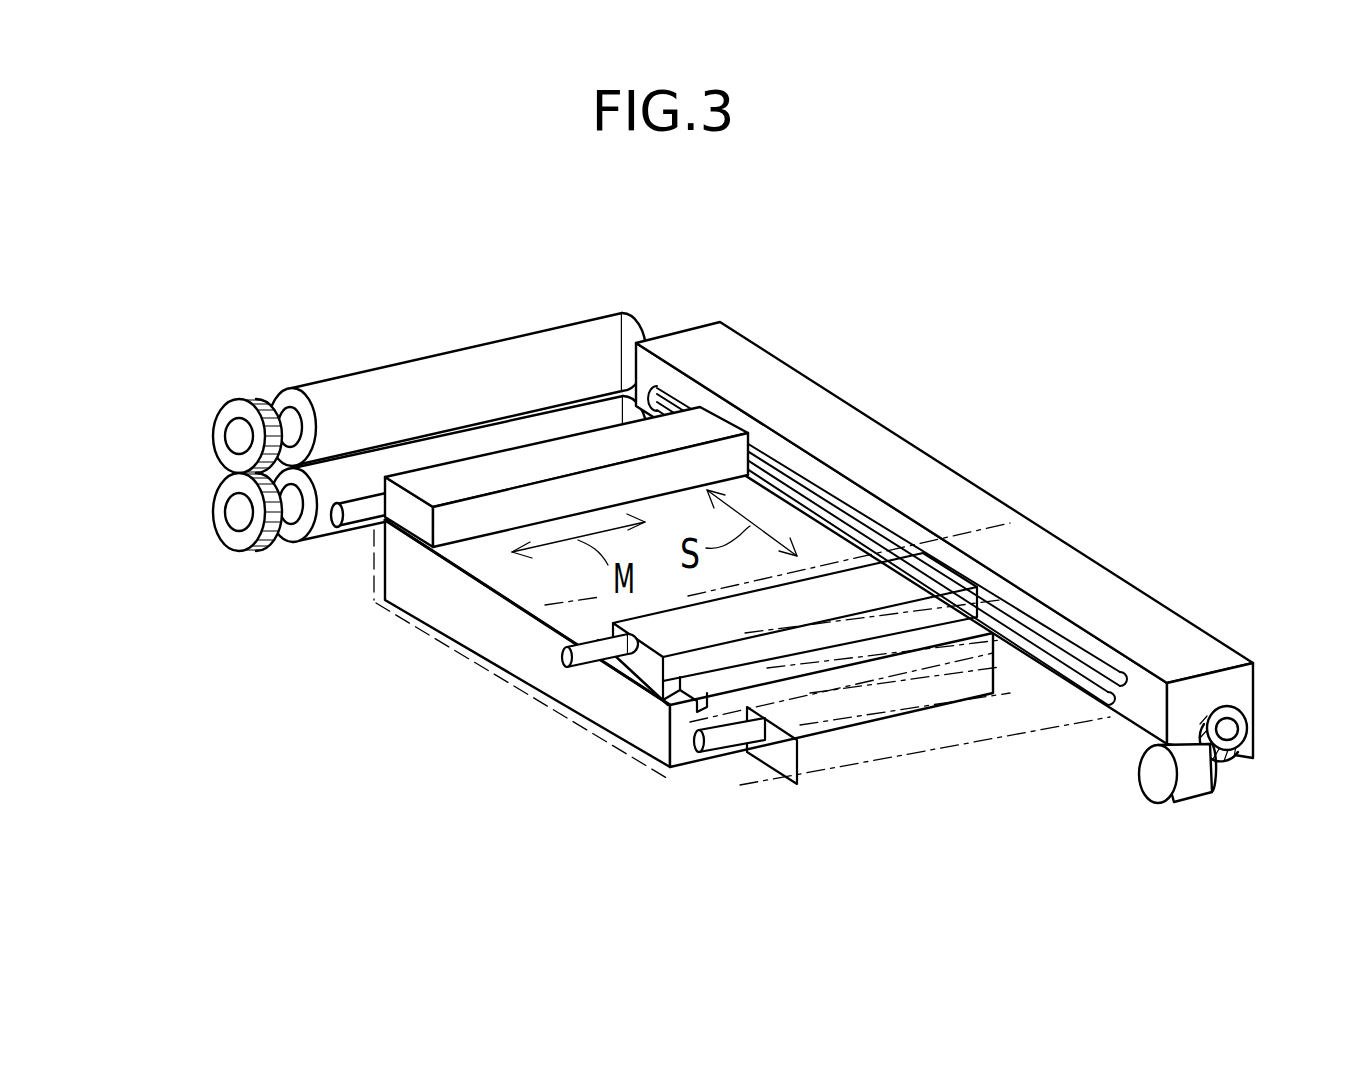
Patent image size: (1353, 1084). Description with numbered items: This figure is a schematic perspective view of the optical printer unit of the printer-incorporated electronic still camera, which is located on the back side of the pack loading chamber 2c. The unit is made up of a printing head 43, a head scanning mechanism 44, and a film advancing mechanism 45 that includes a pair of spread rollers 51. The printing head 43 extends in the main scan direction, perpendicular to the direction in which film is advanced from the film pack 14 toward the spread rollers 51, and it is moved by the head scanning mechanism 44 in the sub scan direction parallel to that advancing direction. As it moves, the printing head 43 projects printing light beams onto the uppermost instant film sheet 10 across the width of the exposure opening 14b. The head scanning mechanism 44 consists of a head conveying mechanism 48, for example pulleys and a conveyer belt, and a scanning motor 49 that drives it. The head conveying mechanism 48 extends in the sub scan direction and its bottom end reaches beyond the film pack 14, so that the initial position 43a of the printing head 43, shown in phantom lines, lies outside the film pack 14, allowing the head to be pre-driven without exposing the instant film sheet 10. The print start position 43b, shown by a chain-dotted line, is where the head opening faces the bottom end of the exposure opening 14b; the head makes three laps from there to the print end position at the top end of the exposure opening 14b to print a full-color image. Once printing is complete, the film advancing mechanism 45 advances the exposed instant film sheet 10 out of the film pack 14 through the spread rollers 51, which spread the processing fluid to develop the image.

The film advancing mechanism 45 is at (250, 279).
The spread rollers 51 is at (463, 437).
The printing head 43 is at (582, 450).
The exposure opening 14b is at (786, 522).
The head scanning mechanism 44 is at (944, 555).
The head conveying mechanism 48 is at (944, 538).
The scanning motor 49 is at (1183, 752).
The instant film sheet 10 is at (537, 577).
The print start position 43b is at (520, 617).
The film pack 14 is at (620, 749).
The pack loading chamber 2c is at (728, 764).
The initial position 43a is at (949, 748).